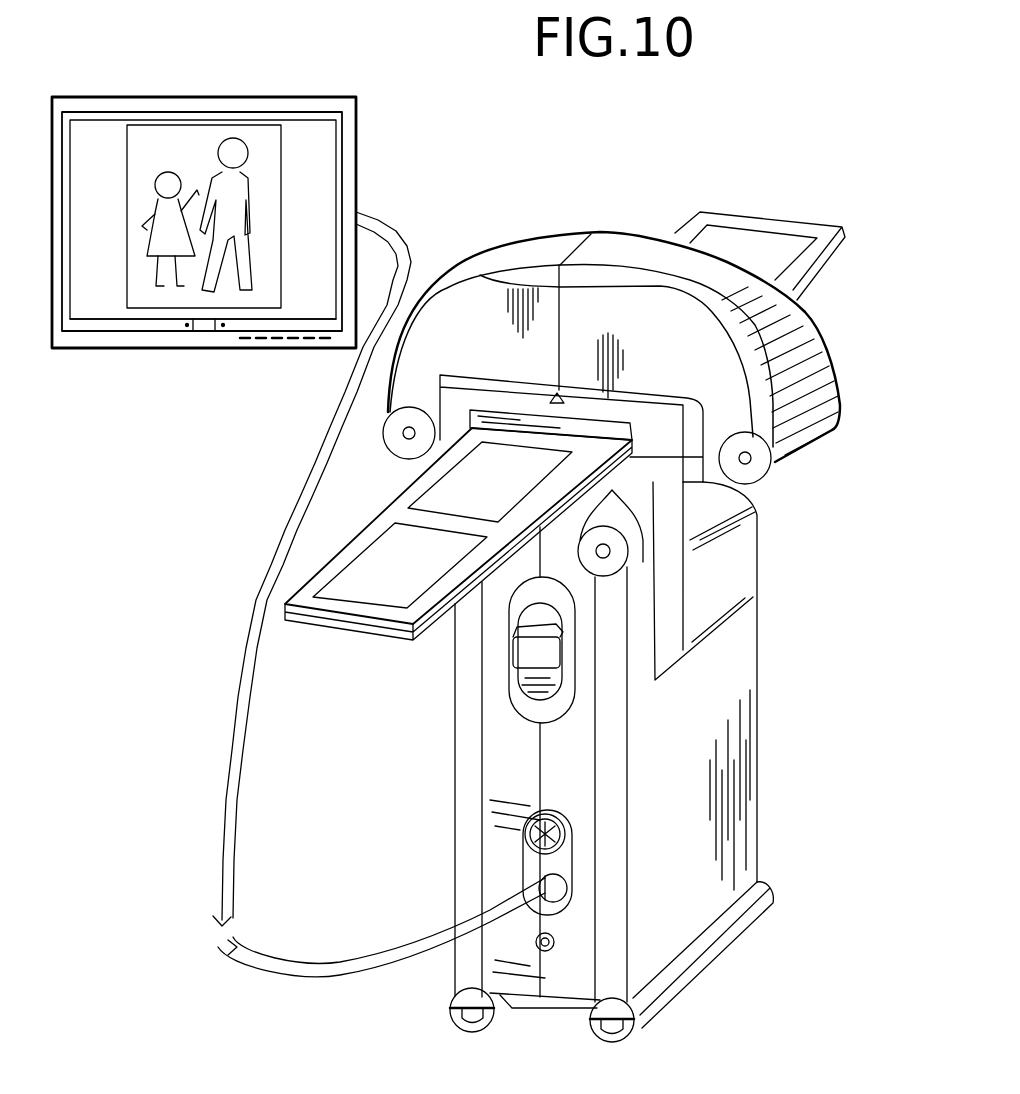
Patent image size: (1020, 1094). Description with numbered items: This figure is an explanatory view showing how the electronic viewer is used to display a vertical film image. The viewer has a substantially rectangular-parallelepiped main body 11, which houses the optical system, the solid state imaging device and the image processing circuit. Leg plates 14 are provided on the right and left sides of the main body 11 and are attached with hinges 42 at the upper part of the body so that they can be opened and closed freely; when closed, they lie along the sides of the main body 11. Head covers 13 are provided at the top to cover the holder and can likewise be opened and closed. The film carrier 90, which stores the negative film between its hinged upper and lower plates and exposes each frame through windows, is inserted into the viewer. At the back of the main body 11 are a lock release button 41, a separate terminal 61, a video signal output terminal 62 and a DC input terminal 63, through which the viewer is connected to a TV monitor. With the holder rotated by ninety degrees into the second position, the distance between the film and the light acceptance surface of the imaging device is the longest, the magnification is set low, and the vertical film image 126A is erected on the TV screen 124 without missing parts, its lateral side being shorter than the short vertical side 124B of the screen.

The head cover 13 is at (620, 316).
The short (vertical) side 124B is at (357, 197).
The TV screen 124 is at (105, 298).
The image window 126A is at (285, 258).
The film carrier 90 is at (345, 563).
The hinge 42 is at (612, 560).
The lock release button 41 is at (514, 652).
The main body 11 is at (497, 748).
The leg plate 14 is at (470, 805).
The separate terminal 61 is at (525, 852).
The video signal output terminal 62 is at (572, 880).
The DC input terminal 63 is at (535, 947).